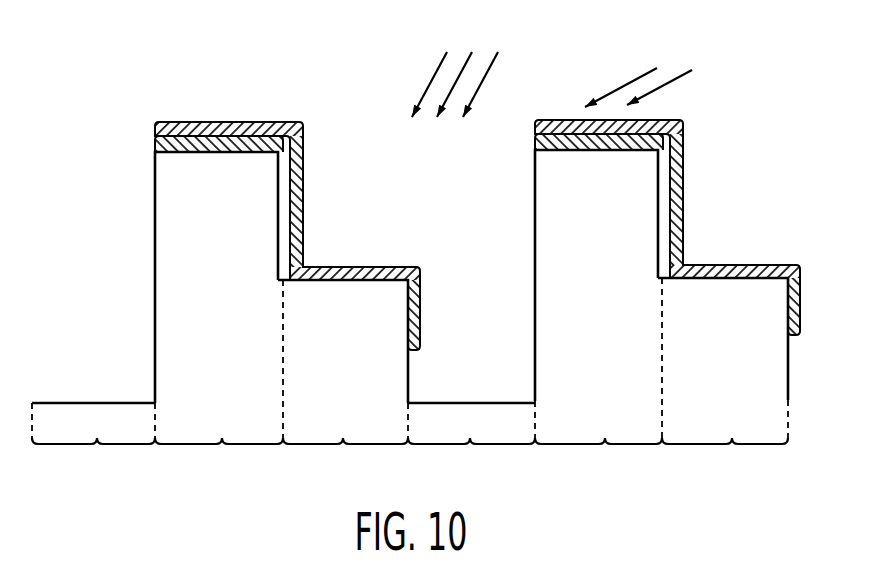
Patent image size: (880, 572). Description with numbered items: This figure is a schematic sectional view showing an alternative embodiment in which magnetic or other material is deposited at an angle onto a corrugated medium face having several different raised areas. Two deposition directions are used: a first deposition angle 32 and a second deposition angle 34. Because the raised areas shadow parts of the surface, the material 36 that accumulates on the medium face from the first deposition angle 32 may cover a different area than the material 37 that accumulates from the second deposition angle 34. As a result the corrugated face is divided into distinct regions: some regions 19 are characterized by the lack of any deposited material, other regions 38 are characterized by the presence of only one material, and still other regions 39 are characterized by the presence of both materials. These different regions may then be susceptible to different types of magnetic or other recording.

The regions lacking any material 19 is at (410, 378).
The first deposition angle 32 is at (808, 51).
The second deposition angle 34 is at (304, 54).
The material accumulated from the first deposition angle 36 is at (237, 141).
The material accumulated from the second deposition angle 37 is at (207, 121).
The regions with one material 38 is at (533, 378).
The regions with both materials 39 is at (408, 314).